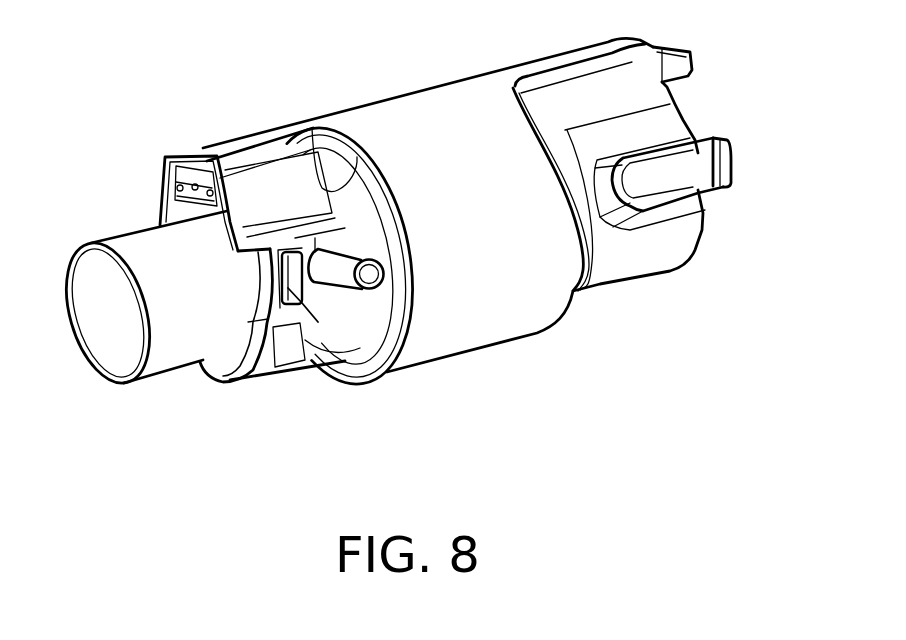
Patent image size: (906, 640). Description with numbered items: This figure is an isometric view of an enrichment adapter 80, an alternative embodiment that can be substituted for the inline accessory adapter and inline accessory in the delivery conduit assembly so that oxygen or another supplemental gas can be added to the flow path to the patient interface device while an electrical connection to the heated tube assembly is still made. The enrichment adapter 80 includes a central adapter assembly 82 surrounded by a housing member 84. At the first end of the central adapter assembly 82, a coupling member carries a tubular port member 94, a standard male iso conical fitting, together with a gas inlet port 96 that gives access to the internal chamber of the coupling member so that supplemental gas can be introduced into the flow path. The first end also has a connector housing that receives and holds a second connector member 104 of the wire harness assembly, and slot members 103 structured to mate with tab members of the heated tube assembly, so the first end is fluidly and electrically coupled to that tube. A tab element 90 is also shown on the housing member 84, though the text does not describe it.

The enrichment adapter 80 is at (118, 76).
The central adapter assembly 82 is at (230, 368).
The housing member 84 is at (472, 355).
The latch tab 90 is at (693, 63).
The tubular port member 94 is at (158, 375).
The gas inlet port 96 is at (333, 285).
The slot members 103 is at (307, 362).
The second connector member 104 is at (176, 188).